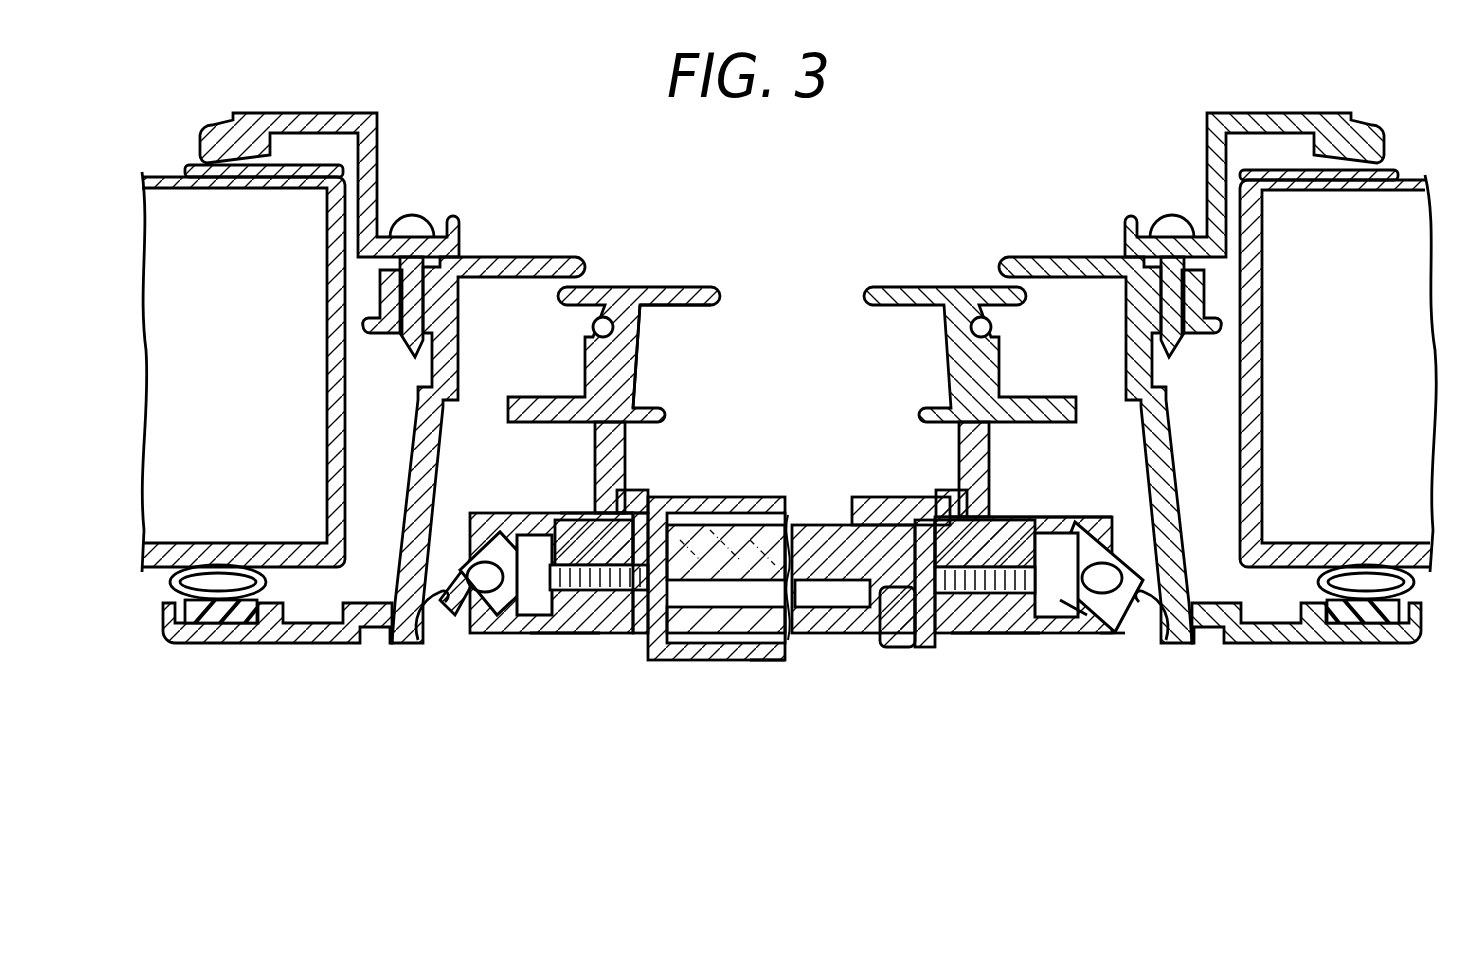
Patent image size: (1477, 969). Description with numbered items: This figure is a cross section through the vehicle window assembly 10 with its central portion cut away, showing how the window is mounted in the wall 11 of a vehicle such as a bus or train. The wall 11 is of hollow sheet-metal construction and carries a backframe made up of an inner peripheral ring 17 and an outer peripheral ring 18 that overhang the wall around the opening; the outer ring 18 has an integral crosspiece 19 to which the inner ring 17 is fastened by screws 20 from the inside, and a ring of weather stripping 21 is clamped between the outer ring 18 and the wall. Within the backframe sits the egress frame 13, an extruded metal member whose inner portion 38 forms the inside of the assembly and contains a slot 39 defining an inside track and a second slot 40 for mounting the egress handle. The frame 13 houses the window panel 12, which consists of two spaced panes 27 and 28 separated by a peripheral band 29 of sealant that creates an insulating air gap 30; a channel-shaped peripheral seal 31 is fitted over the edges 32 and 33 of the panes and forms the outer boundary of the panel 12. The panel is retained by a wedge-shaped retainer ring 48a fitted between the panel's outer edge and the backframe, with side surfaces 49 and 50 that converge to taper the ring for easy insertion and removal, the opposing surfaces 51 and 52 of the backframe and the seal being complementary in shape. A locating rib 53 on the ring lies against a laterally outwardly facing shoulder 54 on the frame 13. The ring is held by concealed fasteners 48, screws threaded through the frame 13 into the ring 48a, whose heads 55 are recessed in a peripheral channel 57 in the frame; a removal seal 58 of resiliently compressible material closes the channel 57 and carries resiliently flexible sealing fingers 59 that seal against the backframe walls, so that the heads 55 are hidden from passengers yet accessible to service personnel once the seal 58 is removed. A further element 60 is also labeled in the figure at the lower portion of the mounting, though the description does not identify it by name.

The vehicle window assembly 10 is at (864, 702).
The wall 11 is at (1415, 178).
The window panel 12 is at (788, 642).
The frame 13 is at (674, 280).
The inner peripheral ring 17 is at (1258, 125).
The outer peripheral ring 18 is at (1313, 645).
The crosspiece 19 is at (426, 435).
The screws 20 is at (413, 231).
The weather stripping 21 is at (1422, 585).
The pane 27 is at (815, 525).
The pane 28 is at (803, 632).
The peripheral band of sealant 29 is at (878, 622).
The insulating air gap 30 is at (832, 606).
The channel-shaped peripheral seal 31 is at (622, 620).
The edge 32 is at (960, 510).
The edge 33 is at (925, 625).
The inner portion 38 is at (641, 336).
The slot 39 is at (700, 306).
The second slot 40 is at (688, 510).
The concealed fasteners 48 is at (553, 535).
The retainer ring 48a is at (562, 633).
The side surface 49 is at (967, 500).
The side surface 50 is at (684, 660).
The opposing surface 51 is at (600, 540).
The opposing surface 52 is at (648, 518).
The locating rib 53 is at (985, 612).
The shoulder 54 is at (1005, 625).
The heads 55 is at (497, 612).
The peripheral channel 57 is at (1080, 610).
The removal seal 58 is at (1117, 622).
The sealing fingers 59 is at (445, 625).
The housing foot 60 is at (786, 642).